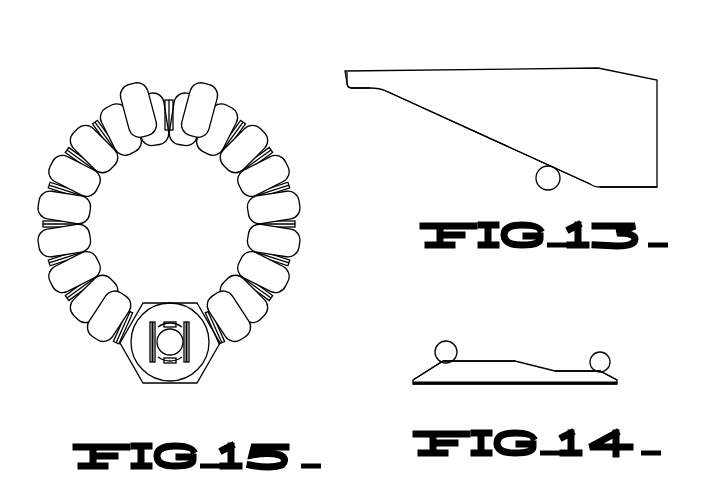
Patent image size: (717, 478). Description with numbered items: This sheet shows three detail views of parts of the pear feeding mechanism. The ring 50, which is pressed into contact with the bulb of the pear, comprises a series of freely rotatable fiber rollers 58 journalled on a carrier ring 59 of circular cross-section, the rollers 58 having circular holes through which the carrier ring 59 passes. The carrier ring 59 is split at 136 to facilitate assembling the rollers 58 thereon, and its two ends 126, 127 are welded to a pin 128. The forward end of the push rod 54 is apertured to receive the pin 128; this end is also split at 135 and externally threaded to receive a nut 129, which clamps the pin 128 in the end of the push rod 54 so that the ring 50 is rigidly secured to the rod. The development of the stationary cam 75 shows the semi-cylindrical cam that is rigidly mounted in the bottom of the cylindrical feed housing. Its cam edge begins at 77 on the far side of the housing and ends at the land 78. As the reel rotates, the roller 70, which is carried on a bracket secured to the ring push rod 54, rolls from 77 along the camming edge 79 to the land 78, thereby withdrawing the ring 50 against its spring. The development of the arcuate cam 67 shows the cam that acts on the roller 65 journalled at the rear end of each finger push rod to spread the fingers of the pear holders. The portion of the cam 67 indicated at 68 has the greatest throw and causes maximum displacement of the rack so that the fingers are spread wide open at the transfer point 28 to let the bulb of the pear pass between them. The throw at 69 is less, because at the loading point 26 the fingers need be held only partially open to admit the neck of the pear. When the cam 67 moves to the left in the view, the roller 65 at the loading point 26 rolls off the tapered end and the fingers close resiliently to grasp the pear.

In FIG. 15, the ring 50 is at (277, 110).
In FIG. 15, the split 136 is at (168, 108).
In FIG. 15, the carrier ring 59 is at (277, 185).
In FIG. 15, the fiber rollers 58 is at (297, 235).
In FIG. 15, the split 135 is at (153, 303).
In FIG. 15, the push rod 54 is at (170, 300).
In FIG. 15, the nut 129 is at (195, 302).
In FIG. 15, the end of the ring 126 is at (151, 375).
In FIG. 15, the end of the ring 127 is at (195, 378).
In FIG. 15, the pin 128 is at (178, 352).
In FIG. 13, the cam 75 is at (547, 115).
In FIG. 13, the beginning of cam edge 77 is at (348, 88).
In FIG. 13, the camming edge 79 is at (466, 128).
In FIG. 13, the roller 70 is at (538, 181).
In FIG. 13, the land 78 is at (643, 187).
In FIG. 14, the cam 67 is at (521, 383).
In FIG. 14, the roller 65 is at (455, 351).
In FIG. 14, the cam portion 68 is at (440, 365).
In FIG. 14, the cam portion 69 is at (600, 382).
In FIG. 14, the transfer point 28 is at (443, 330).
In FIG. 14, the loading point 26 is at (598, 332).